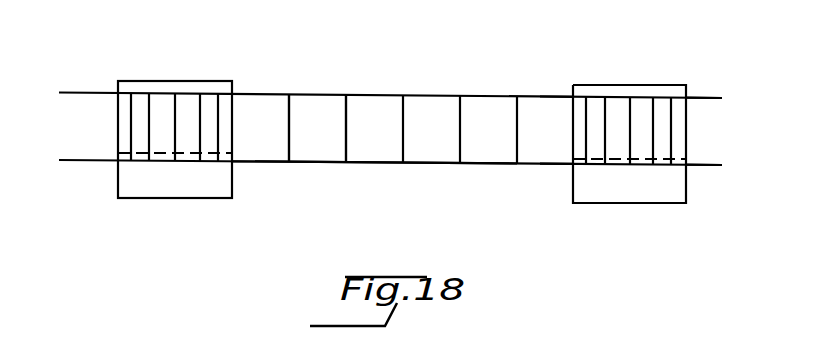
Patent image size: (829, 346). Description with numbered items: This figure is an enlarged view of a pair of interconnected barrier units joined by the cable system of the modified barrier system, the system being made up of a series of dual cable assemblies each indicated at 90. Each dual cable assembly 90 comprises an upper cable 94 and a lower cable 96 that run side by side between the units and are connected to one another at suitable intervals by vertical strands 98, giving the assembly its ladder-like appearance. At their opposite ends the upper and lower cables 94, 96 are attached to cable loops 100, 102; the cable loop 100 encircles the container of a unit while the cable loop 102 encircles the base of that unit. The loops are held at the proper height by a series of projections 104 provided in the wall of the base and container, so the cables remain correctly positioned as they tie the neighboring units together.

The dual cable assembly 90 is at (362, 88).
The upper cable 94 is at (425, 95).
The lower cable 96 is at (390, 163).
The vertical strands 98 is at (345, 110).
The cable loop 100 is at (598, 98).
The cable loop 102 is at (638, 165).
The projections 104 is at (551, 99).